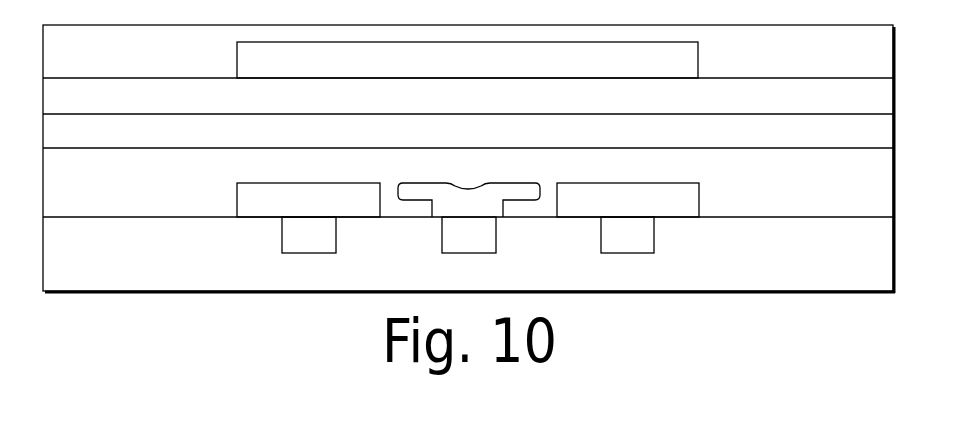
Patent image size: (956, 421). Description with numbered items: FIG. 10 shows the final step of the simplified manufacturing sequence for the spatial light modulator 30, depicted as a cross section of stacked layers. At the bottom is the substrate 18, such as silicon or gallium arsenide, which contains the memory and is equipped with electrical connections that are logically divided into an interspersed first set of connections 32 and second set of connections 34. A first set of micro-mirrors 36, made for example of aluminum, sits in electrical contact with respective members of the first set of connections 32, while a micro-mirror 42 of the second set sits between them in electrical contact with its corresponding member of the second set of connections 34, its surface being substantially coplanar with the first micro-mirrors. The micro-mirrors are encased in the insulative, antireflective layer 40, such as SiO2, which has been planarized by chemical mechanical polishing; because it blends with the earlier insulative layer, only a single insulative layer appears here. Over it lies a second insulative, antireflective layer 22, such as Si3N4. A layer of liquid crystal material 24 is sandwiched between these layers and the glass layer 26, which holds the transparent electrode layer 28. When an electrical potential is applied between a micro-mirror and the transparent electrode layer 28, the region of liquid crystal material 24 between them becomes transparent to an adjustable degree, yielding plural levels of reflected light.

The glass layer 26 is at (92, 62).
The transparent electrode layer 28 is at (467, 60).
The liquid crystal material 24 is at (92, 107).
The second insulative antireflective layer 22 is at (92, 142).
The additional insulative antireflective layer 40 is at (92, 186).
The substrate 18 is at (92, 264).
The first set of micro-mirrors 36 is at (468, 200).
The first set of connections 32 is at (468, 235).
The micro-mirror of the second set 42 is at (469, 200).
The second set of connections 34 is at (469, 235).
The spatial light modulator 30 is at (187, 315).